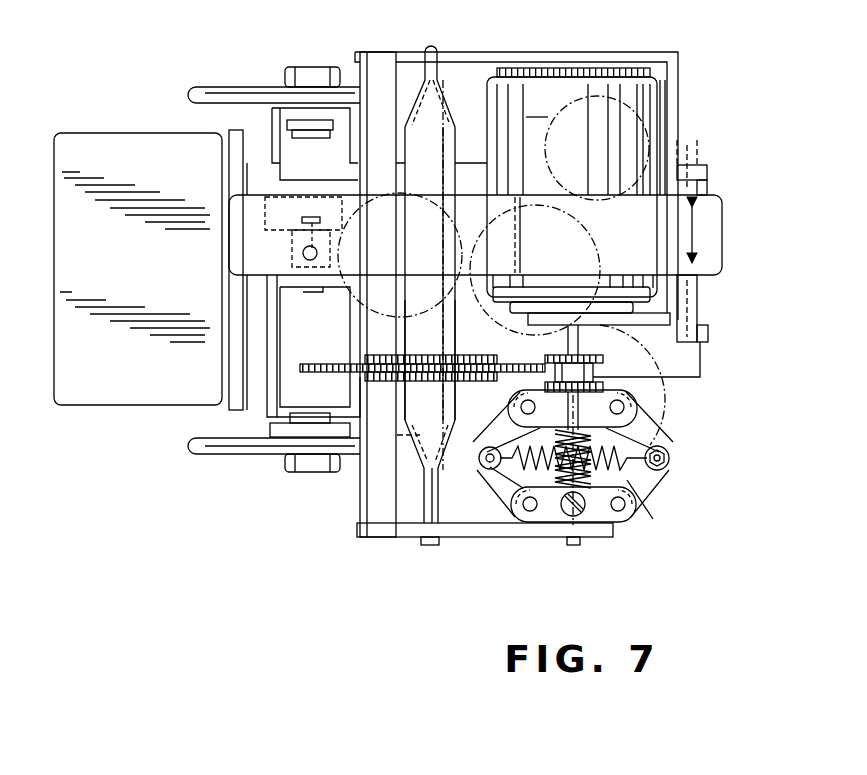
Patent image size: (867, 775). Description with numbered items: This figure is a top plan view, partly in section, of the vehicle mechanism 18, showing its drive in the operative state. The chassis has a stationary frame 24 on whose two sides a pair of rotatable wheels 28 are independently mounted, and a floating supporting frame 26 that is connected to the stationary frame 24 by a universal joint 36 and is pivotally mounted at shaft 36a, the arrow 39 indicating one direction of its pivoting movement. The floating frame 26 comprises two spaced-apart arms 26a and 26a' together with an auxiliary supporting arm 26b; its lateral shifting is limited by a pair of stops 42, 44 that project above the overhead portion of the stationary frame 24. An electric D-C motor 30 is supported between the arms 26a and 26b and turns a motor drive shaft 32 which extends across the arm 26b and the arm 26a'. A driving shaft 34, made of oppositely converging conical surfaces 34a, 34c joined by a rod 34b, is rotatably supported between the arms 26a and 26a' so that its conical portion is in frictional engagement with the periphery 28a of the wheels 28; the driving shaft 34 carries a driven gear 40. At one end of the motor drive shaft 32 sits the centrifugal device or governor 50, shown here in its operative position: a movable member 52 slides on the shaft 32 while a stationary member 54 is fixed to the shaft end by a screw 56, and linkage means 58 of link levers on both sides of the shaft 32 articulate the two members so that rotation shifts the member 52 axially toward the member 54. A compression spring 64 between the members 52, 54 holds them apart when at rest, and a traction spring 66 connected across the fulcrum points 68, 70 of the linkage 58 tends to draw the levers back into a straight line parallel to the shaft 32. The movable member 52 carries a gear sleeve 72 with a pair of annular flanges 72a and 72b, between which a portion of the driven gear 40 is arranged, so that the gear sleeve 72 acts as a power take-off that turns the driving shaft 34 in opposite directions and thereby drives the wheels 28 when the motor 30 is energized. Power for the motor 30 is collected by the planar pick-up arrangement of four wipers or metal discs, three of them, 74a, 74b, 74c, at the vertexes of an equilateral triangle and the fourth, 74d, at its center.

The vehicle mechanism 18 is at (86, 98).
The stationary frame 24 is at (235, 151).
The floating supporting frame 26 is at (294, 298).
The arm 26a is at (516, 269).
The arm 26a' is at (485, 556).
The auxiliary supporting arm 26b is at (652, 313).
The rotatable wheels 28 is at (245, 84).
The periphery 28a is at (190, 88).
The electric D-C motor 30 is at (568, 88).
The motor drive shaft 32 is at (572, 548).
The driving shaft 34 is at (401, 297).
The conical surface 34a is at (440, 102).
The rod 34b is at (412, 338).
The conical surface 34c is at (420, 434).
The universal joint 36 is at (311, 216).
The shaft 36a is at (303, 253).
The arrow 39 is at (690, 238).
The driven gear 40 is at (305, 372).
The stop 42 is at (704, 176).
The stop 44 is at (706, 336).
The centrifugal device or governor 50 is at (680, 458).
The movable member 52 is at (600, 419).
The stationary member 54 is at (598, 510).
The screw 56 is at (566, 513).
The linkage means 58 is at (492, 490).
The compression spring 64 is at (527, 440).
The traction spring 66 is at (652, 519).
The fulcrum point 68 is at (483, 453).
The fulcrum point 70 is at (666, 470).
The gear sleeve 72 is at (605, 377).
The annular flange 72a is at (588, 356).
The annular flange 72b is at (647, 387).
The wiper or metal disc 74a is at (660, 120).
The wiper or metal disc 74b is at (443, 244).
The wiper or metal disc 74c is at (655, 410).
The wiper or metal disc 74d is at (586, 245).